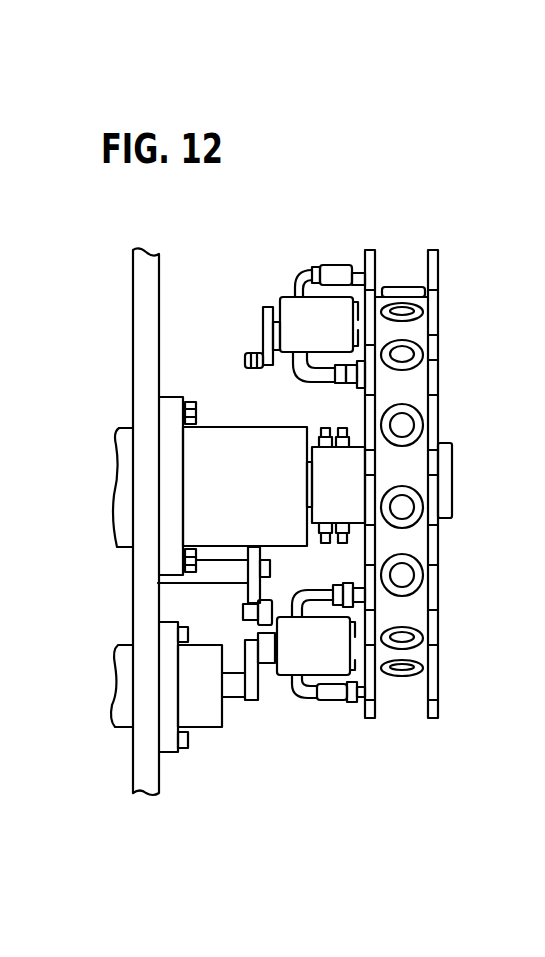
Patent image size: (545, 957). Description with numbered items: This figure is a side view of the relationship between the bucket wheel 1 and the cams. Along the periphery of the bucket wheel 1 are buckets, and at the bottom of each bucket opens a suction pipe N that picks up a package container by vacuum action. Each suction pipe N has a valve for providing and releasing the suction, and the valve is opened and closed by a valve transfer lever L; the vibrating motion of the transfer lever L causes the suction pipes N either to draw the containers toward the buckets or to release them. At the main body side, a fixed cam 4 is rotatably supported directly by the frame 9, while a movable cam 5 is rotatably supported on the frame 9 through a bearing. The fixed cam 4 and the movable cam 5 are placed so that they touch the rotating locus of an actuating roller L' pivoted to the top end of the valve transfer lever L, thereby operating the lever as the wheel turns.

The bucket wheel 1 is at (438, 393).
The fixed cam 4 is at (257, 592).
The movable cam 5 is at (262, 665).
The frame 9 is at (150, 268).
The valve transfer lever L is at (220, 483).
The actuating roller L' is at (173, 471).
The suction pipe N is at (405, 290).